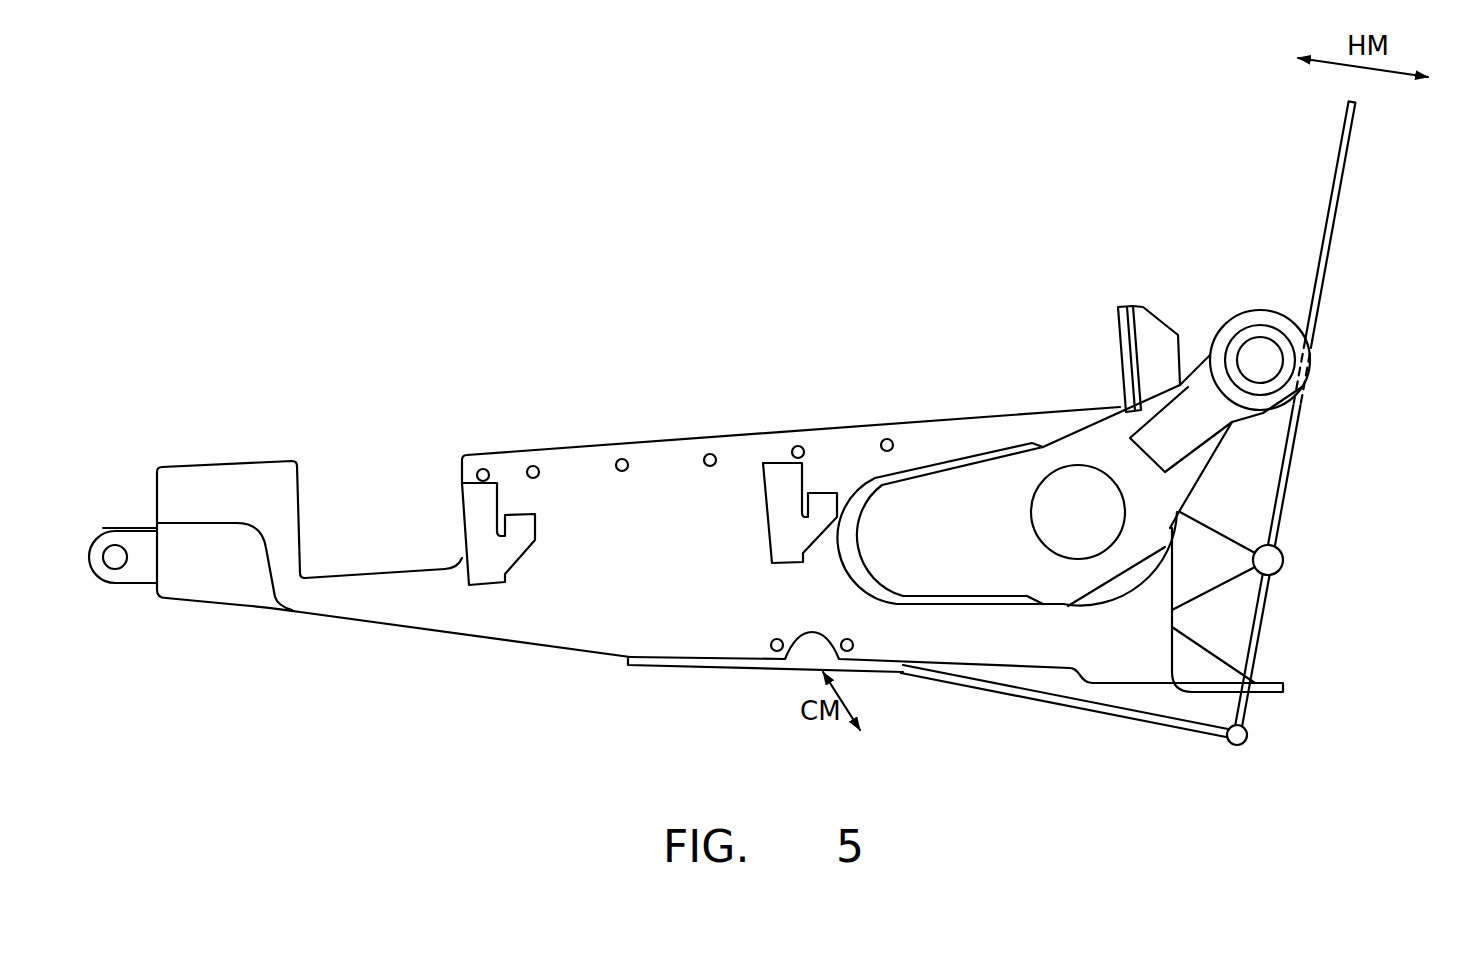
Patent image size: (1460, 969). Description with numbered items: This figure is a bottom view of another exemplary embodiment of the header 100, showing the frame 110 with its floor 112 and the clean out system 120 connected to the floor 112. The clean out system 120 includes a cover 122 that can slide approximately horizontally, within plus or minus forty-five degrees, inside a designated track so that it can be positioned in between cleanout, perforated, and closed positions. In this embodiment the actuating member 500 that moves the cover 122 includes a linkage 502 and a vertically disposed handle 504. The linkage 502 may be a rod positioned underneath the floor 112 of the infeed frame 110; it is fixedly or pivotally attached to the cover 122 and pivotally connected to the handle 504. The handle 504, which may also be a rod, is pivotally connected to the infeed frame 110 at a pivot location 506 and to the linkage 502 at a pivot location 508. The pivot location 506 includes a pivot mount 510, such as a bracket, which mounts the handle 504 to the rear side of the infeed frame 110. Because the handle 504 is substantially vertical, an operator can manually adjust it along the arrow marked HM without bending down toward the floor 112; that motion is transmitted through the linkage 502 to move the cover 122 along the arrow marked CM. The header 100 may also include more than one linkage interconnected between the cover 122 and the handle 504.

The header 100 is at (686, 509).
The frame 110 is at (572, 452).
The floor 112 is at (442, 636).
The clean out system 120 is at (955, 669).
The cover 122 is at (738, 668).
The actuating member 500 is at (1179, 447).
The linkage 502 is at (1115, 718).
The handle 504 is at (1333, 167).
The pivot location 506 is at (1285, 550).
The pivot location 508 is at (1243, 745).
The pivot mount 510 is at (1208, 523).